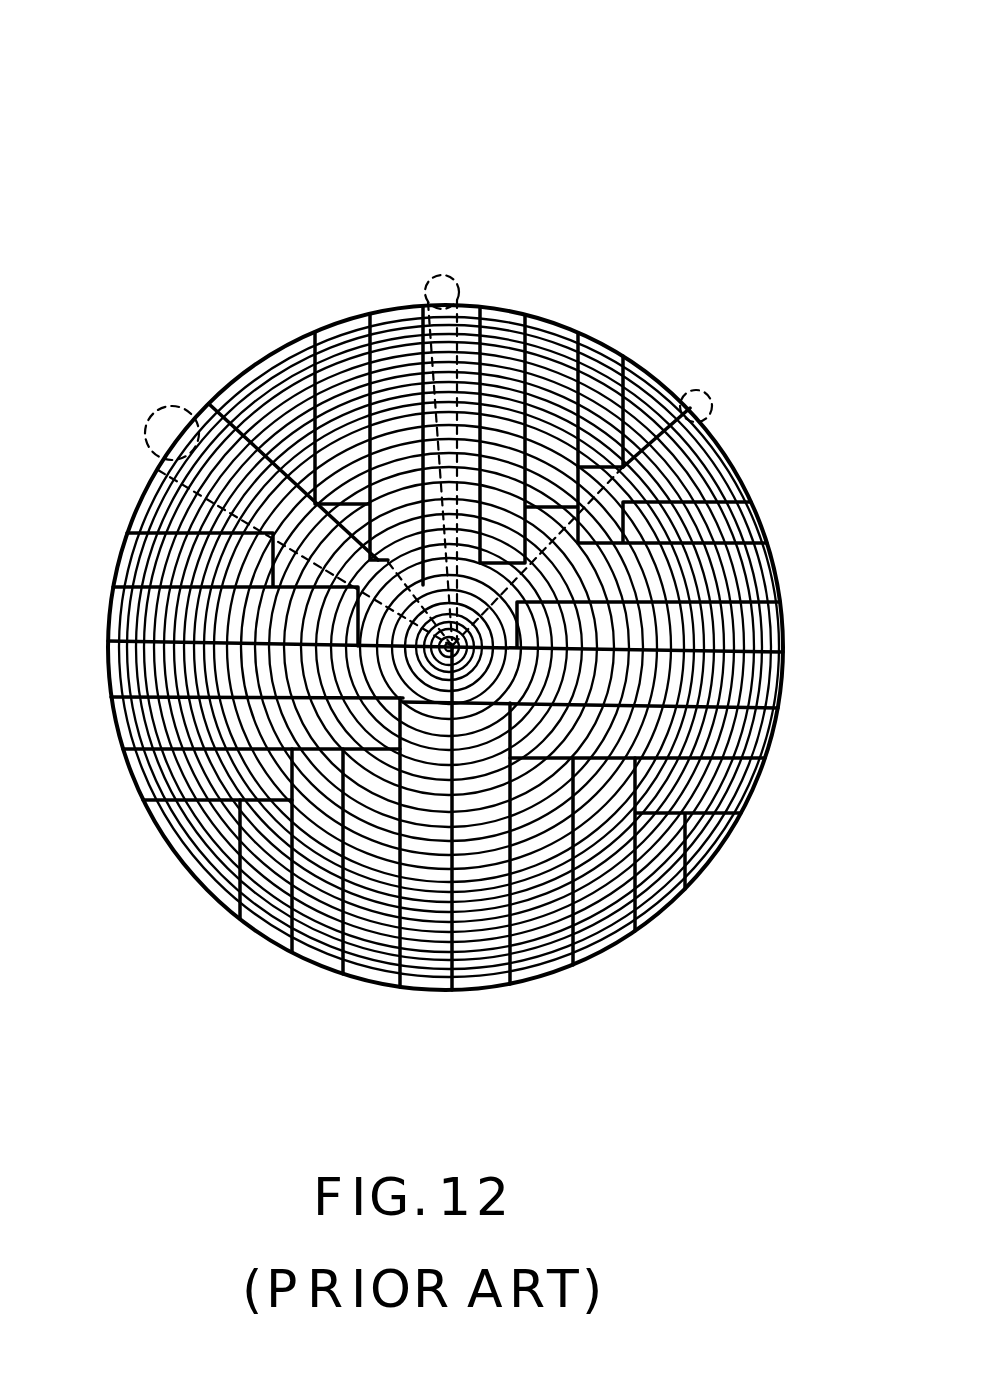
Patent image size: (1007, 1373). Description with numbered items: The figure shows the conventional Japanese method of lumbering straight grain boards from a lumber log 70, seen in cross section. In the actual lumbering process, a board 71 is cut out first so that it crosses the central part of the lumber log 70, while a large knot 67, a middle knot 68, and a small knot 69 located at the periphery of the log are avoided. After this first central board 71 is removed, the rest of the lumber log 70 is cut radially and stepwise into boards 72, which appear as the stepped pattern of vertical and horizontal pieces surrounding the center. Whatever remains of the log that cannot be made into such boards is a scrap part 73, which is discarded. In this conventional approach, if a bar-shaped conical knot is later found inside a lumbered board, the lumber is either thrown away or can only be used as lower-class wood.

The large knot 67 is at (145, 433).
The middle knot 68 is at (462, 278).
The small knot 69 is at (712, 402).
The lumber log 70 is at (245, 92).
The board 71 is at (745, 688).
The boards 72 is at (473, 965).
The scrap part 73 is at (745, 487).